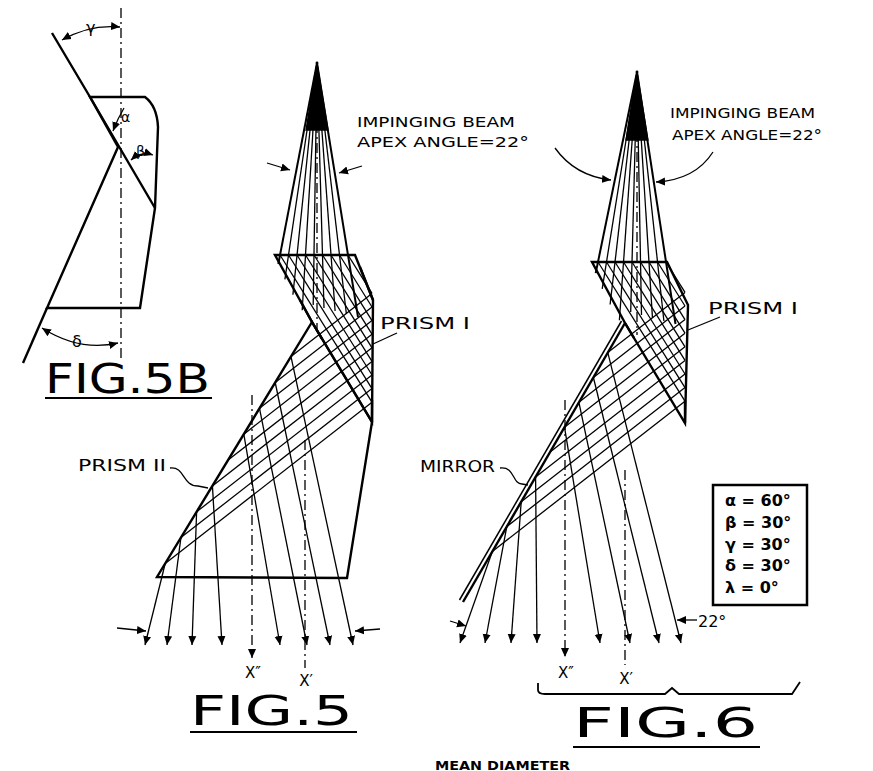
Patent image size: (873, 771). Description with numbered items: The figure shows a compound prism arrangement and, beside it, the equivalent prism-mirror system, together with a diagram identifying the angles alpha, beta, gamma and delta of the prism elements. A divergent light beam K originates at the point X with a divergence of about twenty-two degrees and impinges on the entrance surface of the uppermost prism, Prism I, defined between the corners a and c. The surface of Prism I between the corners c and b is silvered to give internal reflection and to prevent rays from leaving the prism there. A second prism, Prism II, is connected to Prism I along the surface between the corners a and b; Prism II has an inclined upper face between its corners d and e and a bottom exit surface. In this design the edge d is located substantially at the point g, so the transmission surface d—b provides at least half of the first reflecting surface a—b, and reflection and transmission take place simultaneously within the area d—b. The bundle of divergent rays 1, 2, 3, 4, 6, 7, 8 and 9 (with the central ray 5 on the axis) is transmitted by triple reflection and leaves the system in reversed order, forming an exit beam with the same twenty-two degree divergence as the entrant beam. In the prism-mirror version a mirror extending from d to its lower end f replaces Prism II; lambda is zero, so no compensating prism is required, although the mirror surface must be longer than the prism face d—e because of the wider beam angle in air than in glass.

In FIG. 5, the divergent ray 1 is at (268, 365).
In FIG. 6, the divergent ray 1 is at (588, 370).
In FIG. 5, the divergent ray 2 is at (276, 365).
In FIG. 6, the divergent ray 2 is at (596, 370).
In FIG. 5, the divergent ray 3 is at (284, 365).
In FIG. 6, the divergent ray 3 is at (603, 370).
In FIG. 5, the divergent ray 4 is at (292, 365).
In FIG. 6, the divergent ray 4 is at (610, 370).
In FIG. 5, the ray 5 (central ray) of impinging beam 5 is at (300, 261).
In FIG. 6, the ray 5 (central ray) of impinging beam 5 is at (617, 262).
In FIG. 5, the divergent ray 6 is at (292, 365).
In FIG. 6, the divergent ray 6 is at (607, 370).
In FIG. 5, the divergent ray 7 is at (277, 365).
In FIG. 6, the divergent ray 7 is at (594, 370).
In FIG. 5, the divergent ray 8 is at (264, 365).
In FIG. 6, the divergent ray 8 is at (581, 370).
In FIG. 5, the divergent ray 9 is at (253, 365).
In FIG. 6, the divergent ray 9 is at (568, 370).
In FIG. 5, the point of origin of light beam X is at (315, 53).
In FIG. 6, the point of origin of light beam X is at (637, 61).
In FIG. 5, the impinging beam K is at (320, 63).
In FIG. 6, the impinging beam K is at (640, 74).
In FIG. 5, the corner of Prism I a is at (275, 255).
In FIG. 5, the corner of Prism I b is at (372, 422).
In FIG. 6, the corner of Prism I b is at (685, 423).
In FIG. 5, the corner of Prism I c is at (373, 300).
In FIG. 5, the edge of Prism II d is at (310, 322).
In FIG. 6, the edge of Prism II d is at (622, 322).
In FIG. 5, the corner of Prism II e is at (157, 577).
In FIG. 6, the end f of mirror f is at (463, 600).
In FIG. 5, the point on reflecting surface g is at (310, 323).
In FIG. 6, the point on reflecting surface g is at (622, 325).